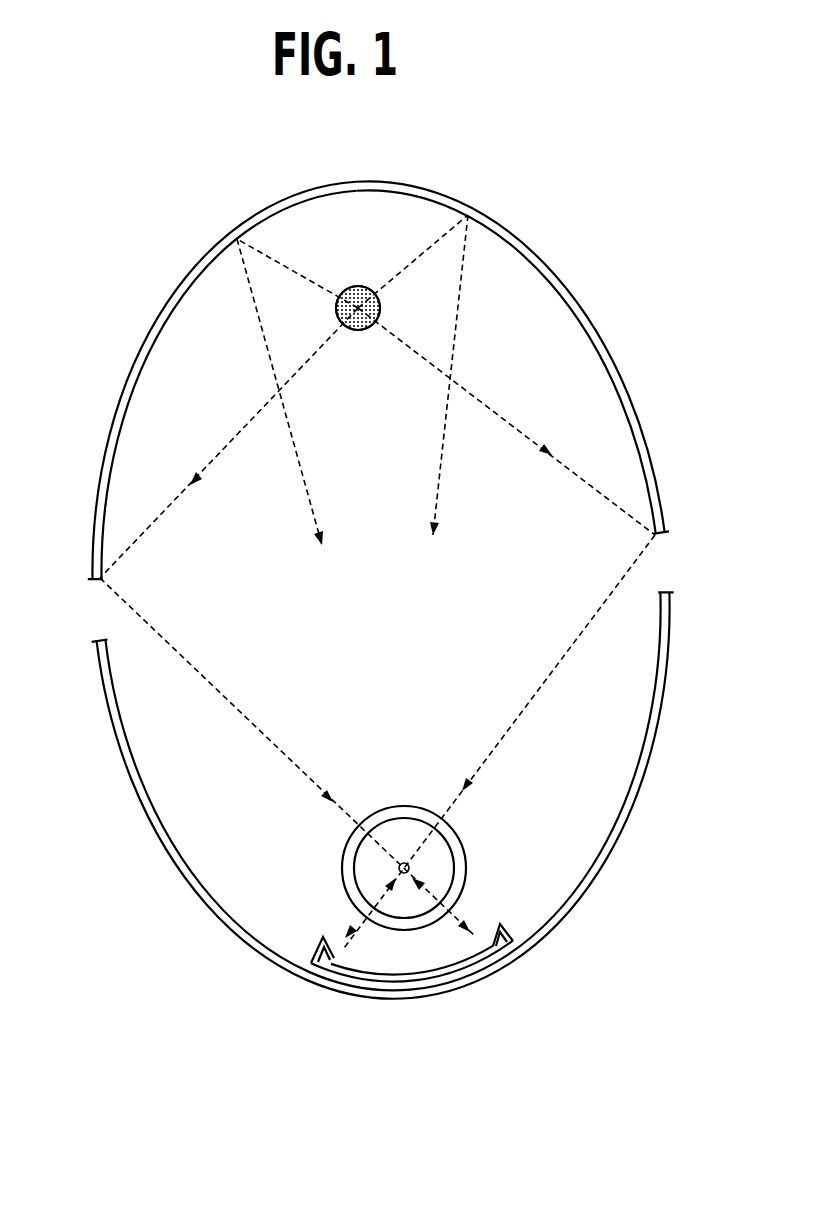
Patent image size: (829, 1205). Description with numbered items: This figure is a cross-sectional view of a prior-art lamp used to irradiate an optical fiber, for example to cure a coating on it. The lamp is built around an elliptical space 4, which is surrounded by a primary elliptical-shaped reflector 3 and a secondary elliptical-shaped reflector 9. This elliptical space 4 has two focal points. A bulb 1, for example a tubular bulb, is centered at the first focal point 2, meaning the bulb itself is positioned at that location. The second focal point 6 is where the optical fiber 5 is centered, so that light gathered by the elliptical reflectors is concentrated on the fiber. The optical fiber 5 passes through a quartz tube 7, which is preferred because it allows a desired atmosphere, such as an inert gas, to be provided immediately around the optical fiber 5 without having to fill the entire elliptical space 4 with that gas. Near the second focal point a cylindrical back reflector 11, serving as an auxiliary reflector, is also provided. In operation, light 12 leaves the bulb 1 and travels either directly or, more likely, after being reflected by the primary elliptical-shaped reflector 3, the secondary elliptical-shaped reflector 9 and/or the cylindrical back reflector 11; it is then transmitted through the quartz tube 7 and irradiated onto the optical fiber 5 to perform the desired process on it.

The bulb 1 is at (385, 303).
The first focal point 2 is at (346, 288).
The primary elliptical-shaped reflector 3 is at (112, 473).
The elliptical space 4 is at (600, 407).
The optical fiber 5 is at (414, 869).
The second focal point 6 is at (405, 862).
The quartz tube 7 is at (465, 888).
The secondary elliptical-shaped reflector 9 is at (150, 786).
The cylindrical back reflector 11 is at (317, 948).
The light 12 is at (238, 245).